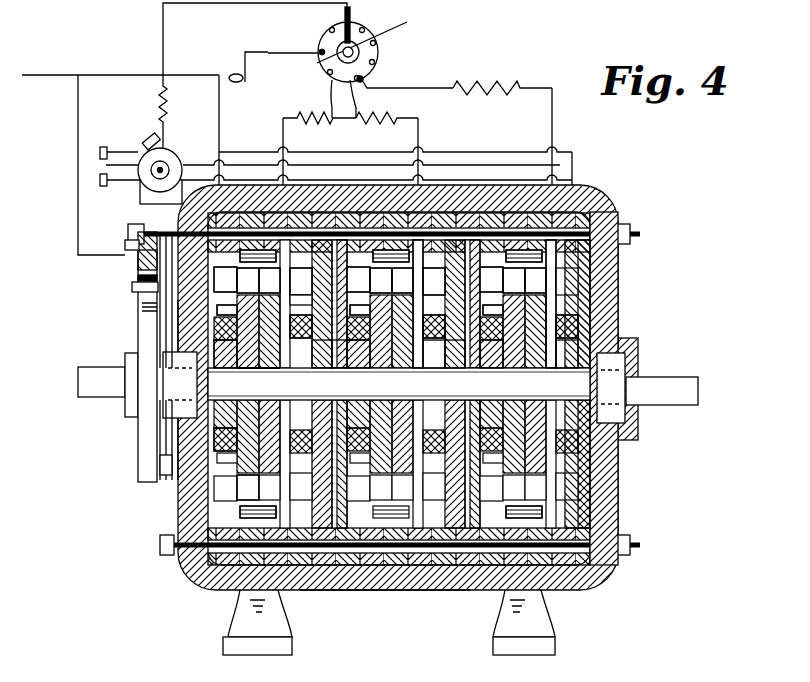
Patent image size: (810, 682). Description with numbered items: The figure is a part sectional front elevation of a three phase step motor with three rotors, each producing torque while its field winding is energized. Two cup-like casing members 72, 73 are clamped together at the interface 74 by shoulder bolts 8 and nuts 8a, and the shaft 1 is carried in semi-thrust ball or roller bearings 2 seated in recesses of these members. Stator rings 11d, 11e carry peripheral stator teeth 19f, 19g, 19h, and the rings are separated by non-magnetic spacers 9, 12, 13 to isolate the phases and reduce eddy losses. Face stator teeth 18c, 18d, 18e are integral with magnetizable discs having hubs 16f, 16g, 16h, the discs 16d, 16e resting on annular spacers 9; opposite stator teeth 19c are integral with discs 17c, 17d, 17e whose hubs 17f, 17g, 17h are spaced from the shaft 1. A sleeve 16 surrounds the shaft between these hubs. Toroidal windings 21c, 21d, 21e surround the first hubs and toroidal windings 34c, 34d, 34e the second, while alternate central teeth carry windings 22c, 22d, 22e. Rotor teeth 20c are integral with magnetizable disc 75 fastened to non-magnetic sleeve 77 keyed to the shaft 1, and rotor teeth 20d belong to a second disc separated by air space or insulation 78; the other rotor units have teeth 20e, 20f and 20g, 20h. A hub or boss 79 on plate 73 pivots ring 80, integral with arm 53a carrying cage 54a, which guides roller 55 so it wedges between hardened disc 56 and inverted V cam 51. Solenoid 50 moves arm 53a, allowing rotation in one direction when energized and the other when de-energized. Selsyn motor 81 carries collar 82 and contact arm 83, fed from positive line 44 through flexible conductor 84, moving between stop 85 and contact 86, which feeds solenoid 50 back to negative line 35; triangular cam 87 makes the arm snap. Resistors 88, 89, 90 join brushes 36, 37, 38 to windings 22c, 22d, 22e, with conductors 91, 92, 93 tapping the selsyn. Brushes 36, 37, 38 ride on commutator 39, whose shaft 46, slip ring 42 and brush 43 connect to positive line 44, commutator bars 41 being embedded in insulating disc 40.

The shaft 1 is at (98, 398).
The semi-thrust ball or roller bearings 2 is at (394, 387).
The shoulder bolts 8 is at (640, 233).
The nuts 8a is at (628, 246).
The spacers 9 is at (616, 206).
The stator ring 11d is at (378, 596).
The stator ring 11e is at (215, 590).
The spacer 12 is at (315, 595).
The spacer 13 is at (590, 194).
The rotor shaft sleeve 16 is at (399, 384).
The magnetizable disc 16d is at (332, 362).
The magnetizable disc 16e is at (457, 370).
The hub 16f is at (221, 363).
The hub 16g is at (357, 368).
The hub 16h is at (488, 366).
The magnetizable disc 17c is at (301, 300).
The magnetizable disc 17d is at (434, 281).
The magnetizable disc 17e is at (590, 283).
The hub 17f is at (311, 362).
The hub 17g is at (433, 366).
The hub 17h is at (567, 369).
The face stator teeth 18c is at (225, 279).
The face stator teeth 18d is at (358, 279).
The face stator teeth 18e is at (491, 279).
The stator teeth 19c is at (301, 281).
The central stator teeth 19f is at (258, 245).
The central stator teeth 19g is at (409, 298).
The central stator teeth 19h is at (539, 298).
The rotor teeth 20c is at (248, 280).
The rotor teeth 20d is at (269, 280).
The rotor teeth 20e is at (381, 280).
The rotor teeth 20f is at (402, 280).
The rotor teeth 20g is at (514, 280).
The rotor teeth 20h is at (535, 280).
The toroidal winding 21c is at (164, 494).
The toroidal winding 21d is at (360, 310).
The toroidal winding 21e is at (493, 310).
The windings 22c is at (278, 257).
The windings 22d is at (378, 374).
The windings 22e is at (526, 385).
The toroidal winding 34c is at (298, 321).
The toroidal winding 34d is at (432, 321).
The toroidal winding 34e is at (566, 321).
The negative line 35 is at (46, 75).
The brush 36 is at (330, 82).
The brush 37 is at (343, 99).
The brush 38 is at (366, 82).
The commutator or distributor 39 is at (273, 59).
The insulating plastic disc 40 is at (325, 31).
The commutator bars 41 is at (378, 46).
The slip ring 42 is at (369, 37).
The brush 43 is at (352, 18).
The positive line 44 is at (244, 4).
The shaft 46 is at (319, 63).
The solenoid 50 is at (125, 246).
The inverted V cam 51 is at (138, 260).
The arm 53a is at (150, 309).
The cage 54a is at (132, 289).
The roller 55 is at (138, 278).
The hardened disc 56 is at (138, 336).
The casing member 72 is at (622, 306).
The casing member 73 is at (180, 505).
The interface 74 is at (392, 596).
The magnetizable disc 75 is at (225, 440).
The non-magnetic sleeve 77 is at (258, 381).
The air space or insulation 78 is at (248, 478).
The hub or boss 79 is at (139, 386).
The ring 80 is at (174, 358).
The selsyn motor 81 is at (166, 150).
The collar 82 is at (172, 162).
The contact arm 83 is at (100, 180).
The flexible conductor 84 is at (160, 100).
The stop 85 is at (144, 147).
The contact 86 is at (120, 186).
The triangular cam 87 is at (100, 152).
The resistor 88 is at (299, 115).
The resistor 89 is at (376, 116).
The resistor 90 is at (478, 84).
The conductor 91 is at (249, 152).
The conductor 92 is at (356, 167).
The conductor 93 is at (460, 181).